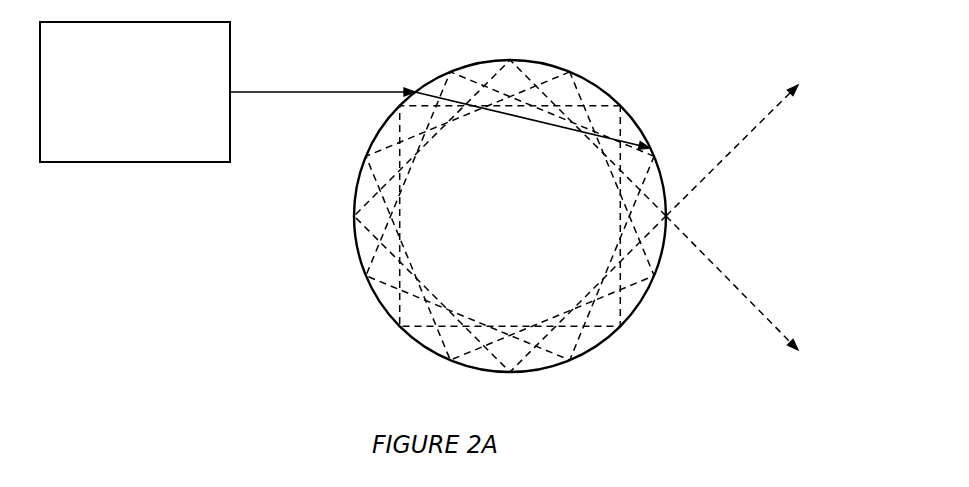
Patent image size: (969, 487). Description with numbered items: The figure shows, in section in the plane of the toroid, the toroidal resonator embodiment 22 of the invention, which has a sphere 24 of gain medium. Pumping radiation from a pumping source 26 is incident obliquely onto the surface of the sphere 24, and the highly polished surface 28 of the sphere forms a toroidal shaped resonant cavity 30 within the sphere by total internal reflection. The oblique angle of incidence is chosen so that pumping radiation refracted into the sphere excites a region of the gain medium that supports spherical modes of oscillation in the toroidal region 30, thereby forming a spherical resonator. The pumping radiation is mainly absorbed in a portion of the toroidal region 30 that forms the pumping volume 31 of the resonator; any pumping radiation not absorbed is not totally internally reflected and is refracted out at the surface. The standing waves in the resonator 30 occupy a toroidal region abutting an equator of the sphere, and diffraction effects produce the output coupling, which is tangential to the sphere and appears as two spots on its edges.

The toroidal resonator embodiment 22 is at (213, 241).
The sphere 24 is at (499, 202).
The pumping source 26 is at (124, 136).
The highly polished surface 28 is at (360, 174).
The toroidal shaped resonant cavity 30 is at (370, 240).
The pumping volume 31 is at (510, 130).